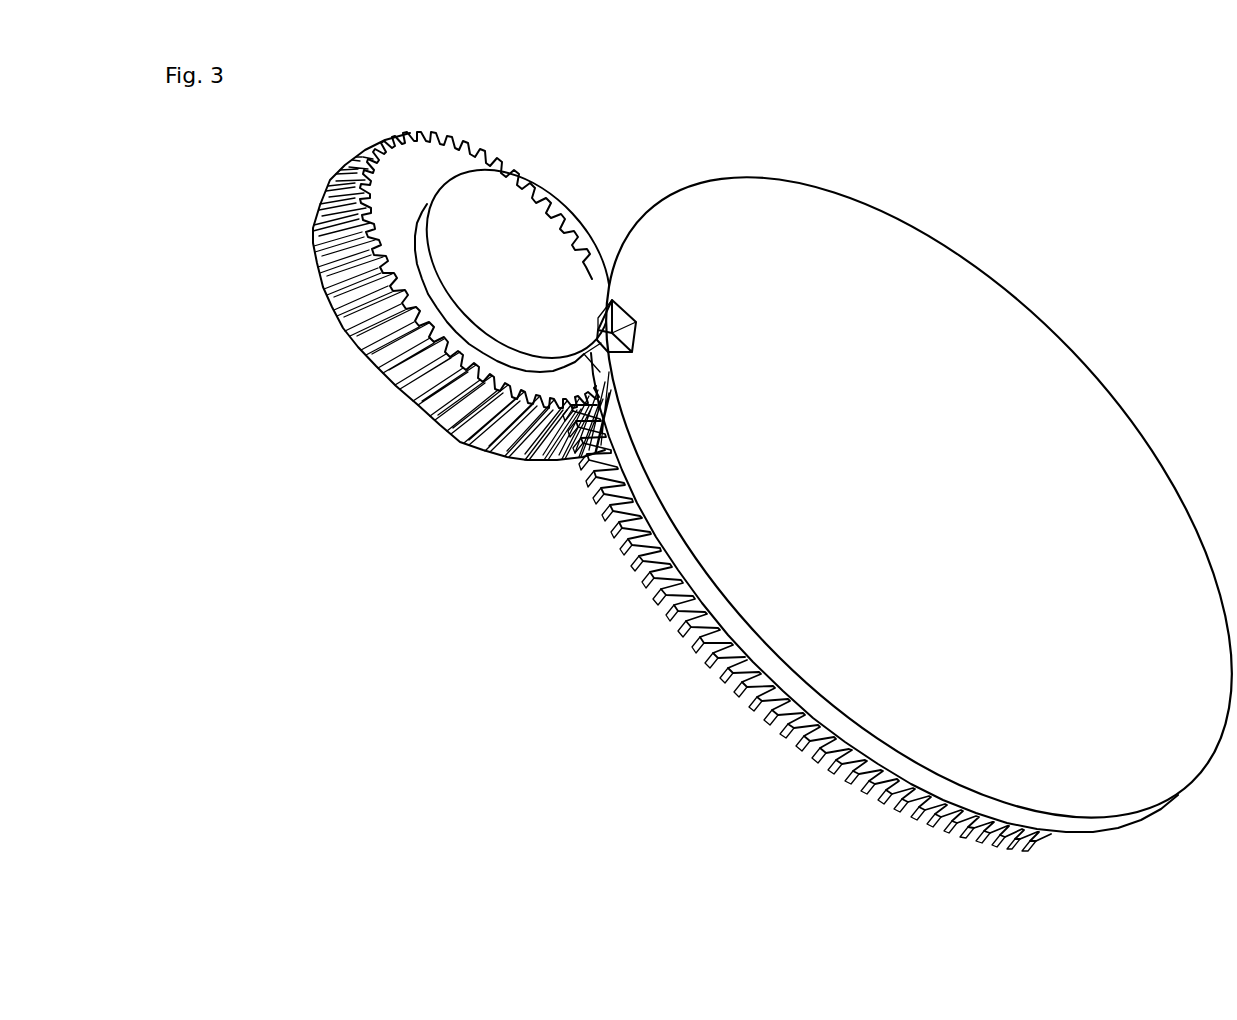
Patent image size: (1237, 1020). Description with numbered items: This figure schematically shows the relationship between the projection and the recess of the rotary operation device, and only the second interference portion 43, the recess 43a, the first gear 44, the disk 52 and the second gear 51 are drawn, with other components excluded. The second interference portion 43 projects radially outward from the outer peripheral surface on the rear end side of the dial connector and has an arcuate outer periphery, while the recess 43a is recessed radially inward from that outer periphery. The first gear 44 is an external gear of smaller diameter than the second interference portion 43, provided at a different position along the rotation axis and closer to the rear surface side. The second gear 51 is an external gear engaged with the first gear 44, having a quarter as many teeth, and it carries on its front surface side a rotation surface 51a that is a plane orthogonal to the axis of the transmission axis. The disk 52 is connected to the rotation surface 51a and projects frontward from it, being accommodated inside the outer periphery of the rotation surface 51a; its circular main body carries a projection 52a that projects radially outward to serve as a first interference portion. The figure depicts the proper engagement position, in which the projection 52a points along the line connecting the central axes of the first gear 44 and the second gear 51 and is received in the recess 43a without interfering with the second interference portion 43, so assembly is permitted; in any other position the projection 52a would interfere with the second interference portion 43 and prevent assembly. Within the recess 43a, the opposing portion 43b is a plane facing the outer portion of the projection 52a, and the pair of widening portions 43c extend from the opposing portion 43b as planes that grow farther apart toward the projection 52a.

The second interference portion 43 is at (865, 497).
The recess 43a is at (663, 216).
The opposing portion 43b is at (634, 320).
The widening portions 43c is at (612, 292).
The first gear 44 is at (692, 647).
The second gear 51 is at (480, 311).
The rotation surface 51a is at (377, 372).
The disk 52 is at (481, 190).
The projection 52a is at (580, 352).